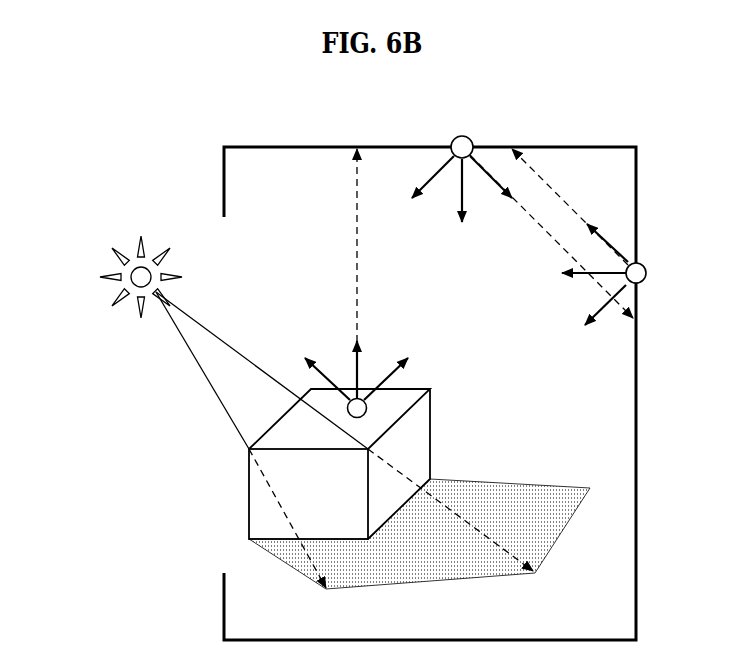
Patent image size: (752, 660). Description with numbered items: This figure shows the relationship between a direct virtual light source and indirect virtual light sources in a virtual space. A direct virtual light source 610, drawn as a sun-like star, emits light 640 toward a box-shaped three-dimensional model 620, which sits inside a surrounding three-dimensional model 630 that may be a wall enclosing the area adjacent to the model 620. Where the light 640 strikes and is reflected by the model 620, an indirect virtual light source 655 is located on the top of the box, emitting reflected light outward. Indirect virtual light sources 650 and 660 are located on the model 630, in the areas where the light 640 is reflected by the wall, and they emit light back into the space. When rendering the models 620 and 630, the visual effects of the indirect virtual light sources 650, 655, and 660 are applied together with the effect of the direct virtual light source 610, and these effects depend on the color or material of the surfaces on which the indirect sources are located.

The direct virtual light source 610 is at (110, 274).
The 3D model 620 is at (431, 413).
The 3D model 630 is at (557, 146).
The light 640 is at (210, 381).
The indirect virtual light source 650 is at (466, 137).
The indirect virtual light source 655 is at (365, 415).
The indirect virtual light source 660 is at (644, 265).